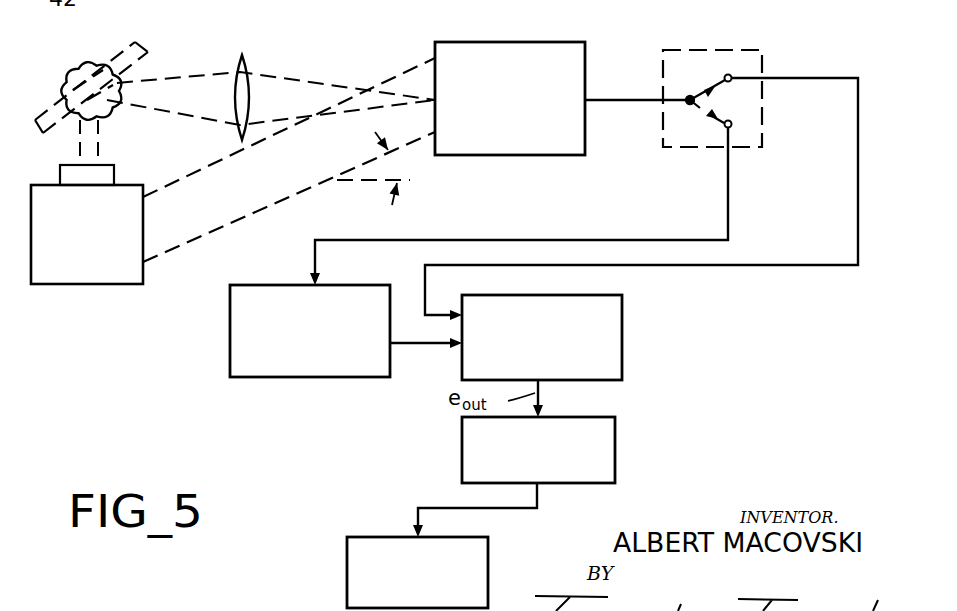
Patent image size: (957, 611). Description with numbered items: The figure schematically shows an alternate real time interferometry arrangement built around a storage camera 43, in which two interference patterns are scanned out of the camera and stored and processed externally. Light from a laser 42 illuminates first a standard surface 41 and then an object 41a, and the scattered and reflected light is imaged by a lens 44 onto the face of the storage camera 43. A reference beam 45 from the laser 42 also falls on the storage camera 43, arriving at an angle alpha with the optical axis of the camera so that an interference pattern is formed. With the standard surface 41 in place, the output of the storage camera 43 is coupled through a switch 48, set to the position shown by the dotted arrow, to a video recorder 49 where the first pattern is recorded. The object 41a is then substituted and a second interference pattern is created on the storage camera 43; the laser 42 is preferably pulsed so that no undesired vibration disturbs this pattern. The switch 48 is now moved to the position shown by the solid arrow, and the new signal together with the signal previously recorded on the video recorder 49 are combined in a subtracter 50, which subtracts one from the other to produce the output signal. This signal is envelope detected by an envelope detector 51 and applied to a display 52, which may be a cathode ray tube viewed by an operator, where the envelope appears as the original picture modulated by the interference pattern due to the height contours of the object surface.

The standard surface 41 is at (148, 50).
The object 41a is at (80, 68).
The laser 42 is at (78, 287).
The storage camera 43 is at (508, 42).
The lens 44 is at (245, 57).
The reference beam 45 is at (294, 200).
The switch 48 is at (745, 50).
The video recorder 49 is at (230, 345).
The subtracter 50 is at (622, 343).
The envelope detector 51 is at (615, 447).
The display 52 is at (347, 567).